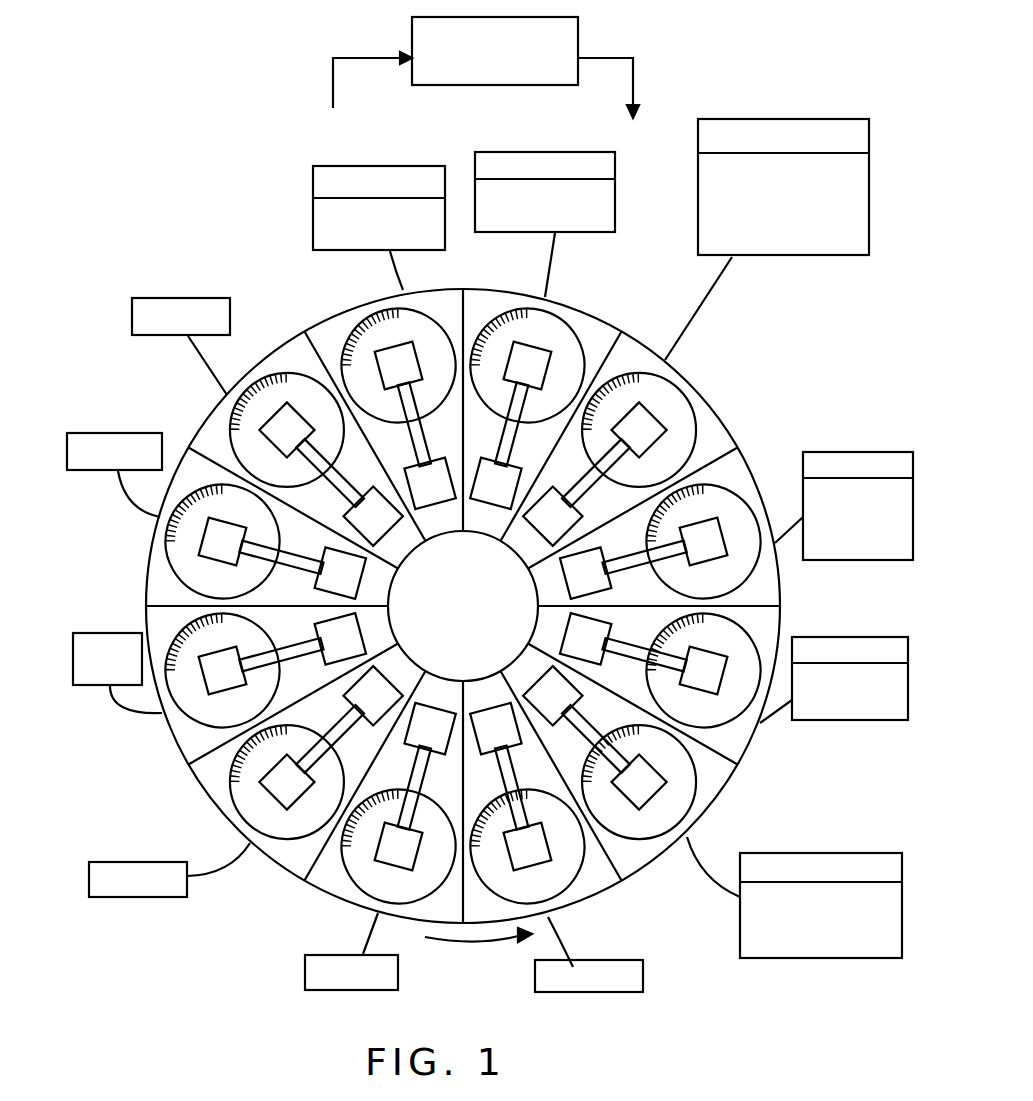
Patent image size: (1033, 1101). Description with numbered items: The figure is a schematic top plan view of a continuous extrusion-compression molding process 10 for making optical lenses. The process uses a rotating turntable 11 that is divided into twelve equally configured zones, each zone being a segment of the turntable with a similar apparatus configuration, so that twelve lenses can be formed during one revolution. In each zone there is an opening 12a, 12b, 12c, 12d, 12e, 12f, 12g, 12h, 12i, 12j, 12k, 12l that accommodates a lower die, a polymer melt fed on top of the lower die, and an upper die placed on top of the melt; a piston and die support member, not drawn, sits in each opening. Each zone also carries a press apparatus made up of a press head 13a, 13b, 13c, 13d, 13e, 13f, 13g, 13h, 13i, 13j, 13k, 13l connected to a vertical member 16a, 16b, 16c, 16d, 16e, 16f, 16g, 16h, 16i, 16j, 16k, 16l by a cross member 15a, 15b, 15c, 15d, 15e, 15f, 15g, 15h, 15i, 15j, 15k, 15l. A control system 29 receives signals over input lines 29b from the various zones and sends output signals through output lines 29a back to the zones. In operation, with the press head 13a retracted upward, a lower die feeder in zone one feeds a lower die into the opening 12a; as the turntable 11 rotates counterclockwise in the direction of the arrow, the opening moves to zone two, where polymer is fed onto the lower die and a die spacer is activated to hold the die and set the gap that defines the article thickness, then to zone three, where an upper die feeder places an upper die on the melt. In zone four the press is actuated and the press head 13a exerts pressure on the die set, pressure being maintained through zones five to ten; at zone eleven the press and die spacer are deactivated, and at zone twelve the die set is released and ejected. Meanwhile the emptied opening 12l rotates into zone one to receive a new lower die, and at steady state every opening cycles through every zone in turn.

The continuous extrusion-compression molding process 10 is at (266, 906).
The rotating turntable 11 is at (320, 320).
The opening 12a is at (745, 566).
The opening 12b is at (655, 388).
The opening 12c is at (542, 320).
The opening 12d is at (413, 323).
The opening 12e is at (265, 390).
The opening 12f is at (185, 555).
The opening 12g is at (192, 695).
The opening 12h is at (242, 765).
The opening 12i is at (355, 862).
The opening 12j is at (567, 870).
The opening 12k is at (632, 822).
The opening 12l is at (740, 647).
The press head 13a is at (716, 524).
The press head 13b is at (660, 420).
The press head 13c is at (542, 350).
The press head 13d is at (387, 350).
The press head 13e is at (263, 417).
The press head 13f is at (212, 537).
The press head 13g is at (212, 663).
The press head 13h is at (273, 785).
The press head 13i is at (392, 848).
The press head 13j is at (530, 848).
The press head 13k is at (662, 783).
The press head 13l is at (710, 693).
The cross member 15a is at (700, 553).
The cross member 15b is at (634, 452).
The cross member 15c is at (536, 370).
The cross member 15d is at (412, 410).
The cross member 15e is at (315, 462).
The cross member 15f is at (250, 562).
The cross member 15g is at (252, 682).
The cross member 15h is at (308, 775).
The cross member 15i is at (415, 803).
The cross member 15j is at (518, 798).
The cross member 15k is at (598, 737).
The cross member 15l is at (668, 646).
The vertical member 16a is at (616, 568).
The vertical member 16b is at (539, 527).
The vertical member 16c is at (482, 494).
The vertical member 16d is at (438, 503).
The vertical member 16e is at (359, 527).
The vertical member 16f is at (326, 584).
The vertical member 16g is at (360, 633).
The vertical member 16h is at (359, 707).
The vertical member 16i is at (418, 740).
The vertical member 16j is at (483, 740).
The vertical member 16k is at (539, 707).
The vertical member 16l is at (573, 650).
The control system 29 is at (578, 37).
The output lines 29a is at (633, 78).
The input lines 29b is at (333, 78).